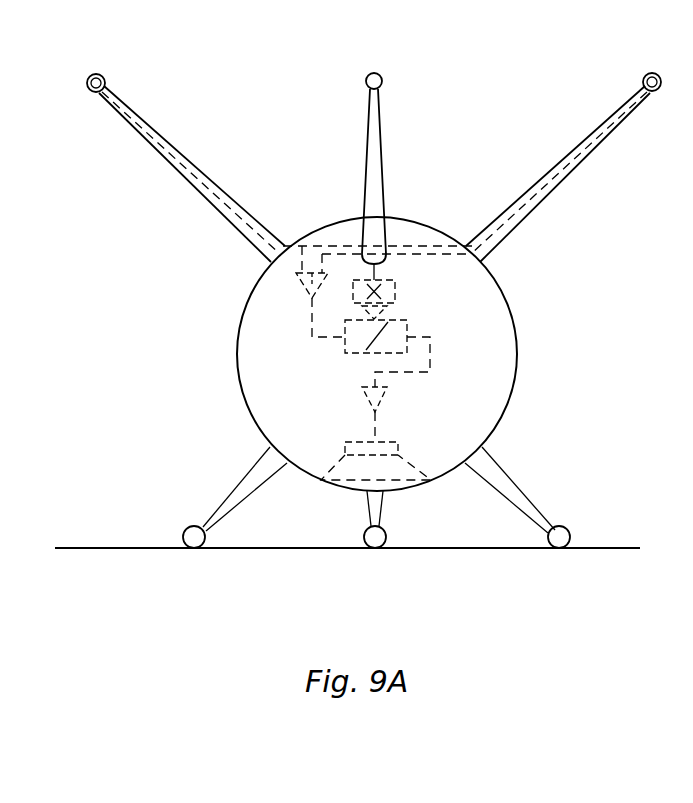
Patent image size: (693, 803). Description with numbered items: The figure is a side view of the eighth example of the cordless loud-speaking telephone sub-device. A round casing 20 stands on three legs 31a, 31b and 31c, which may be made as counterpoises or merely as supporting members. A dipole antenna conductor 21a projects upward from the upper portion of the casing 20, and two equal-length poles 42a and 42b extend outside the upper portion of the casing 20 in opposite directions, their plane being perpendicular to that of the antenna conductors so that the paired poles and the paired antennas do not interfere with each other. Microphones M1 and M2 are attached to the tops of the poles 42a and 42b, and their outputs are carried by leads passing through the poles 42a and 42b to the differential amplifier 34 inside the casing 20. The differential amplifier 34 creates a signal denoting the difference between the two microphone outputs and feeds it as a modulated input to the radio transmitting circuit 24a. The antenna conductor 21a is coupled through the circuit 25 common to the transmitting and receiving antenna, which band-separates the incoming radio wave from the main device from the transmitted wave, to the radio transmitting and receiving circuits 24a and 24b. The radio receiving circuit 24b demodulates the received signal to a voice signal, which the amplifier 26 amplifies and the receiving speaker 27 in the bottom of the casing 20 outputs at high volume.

The casing 20 is at (518, 342).
The dipole antenna conductor 21a is at (380, 152).
The radio transmitting circuit 24a is at (347, 349).
The radio receiving circuit 24b is at (403, 330).
The circuit common to the transmitting and receiving antenna 25 is at (395, 283).
The amplifier 26 is at (384, 394).
The receiving speaker 27 is at (340, 471).
The leg 31a is at (243, 482).
The leg 31b is at (518, 490).
The leg 31c is at (383, 508).
The differential amplifier 34 is at (310, 288).
The pole 42a is at (212, 181).
The pole 42b is at (577, 146).
The microphone M1 is at (106, 80).
The microphone M2 is at (646, 73).